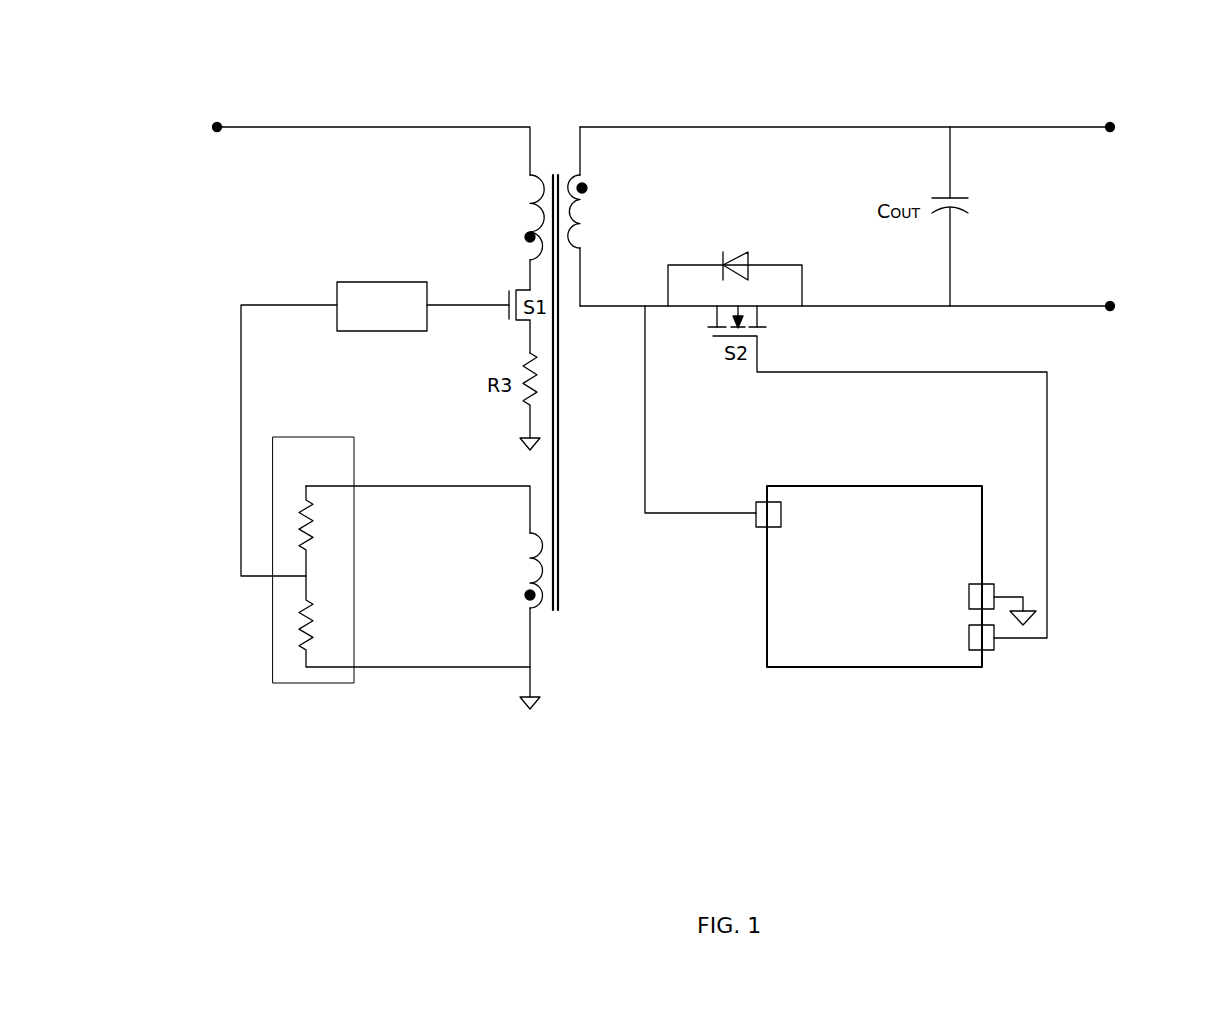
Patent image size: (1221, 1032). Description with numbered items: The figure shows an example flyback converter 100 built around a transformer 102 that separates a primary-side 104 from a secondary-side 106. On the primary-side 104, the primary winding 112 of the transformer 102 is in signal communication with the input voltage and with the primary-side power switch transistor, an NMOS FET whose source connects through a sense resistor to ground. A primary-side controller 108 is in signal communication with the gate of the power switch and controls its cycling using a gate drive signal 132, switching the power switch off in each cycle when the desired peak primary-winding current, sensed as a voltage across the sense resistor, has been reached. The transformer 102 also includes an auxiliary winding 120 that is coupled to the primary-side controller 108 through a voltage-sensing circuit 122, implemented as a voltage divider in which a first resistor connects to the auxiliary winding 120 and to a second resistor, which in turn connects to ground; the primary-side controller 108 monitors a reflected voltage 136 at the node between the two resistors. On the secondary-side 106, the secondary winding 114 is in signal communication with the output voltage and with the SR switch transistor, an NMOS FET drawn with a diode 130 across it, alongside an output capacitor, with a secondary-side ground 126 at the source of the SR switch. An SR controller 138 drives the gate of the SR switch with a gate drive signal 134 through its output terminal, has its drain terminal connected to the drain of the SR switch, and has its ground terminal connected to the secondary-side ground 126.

The flyback converter 100 is at (530, 55).
The transformer 102 is at (556, 175).
The primary-side 104 is at (530, 100).
The secondary-side 106 is at (595, 100).
The primary-side controller 108 is at (400, 315).
The primary winding 112 is at (530, 228).
The secondary winding 114 is at (588, 196).
The auxiliary winding 120 is at (530, 562).
The voltage-sensing circuit 122 is at (325, 472).
The secondary-side ground 126 is at (1032, 613).
The diode 130 is at (750, 262).
The gate drive signal 132 is at (490, 290).
The gate drive signal 134 is at (1063, 425).
The reflected voltage 136 is at (308, 290).
The SR controller 138 is at (892, 587).